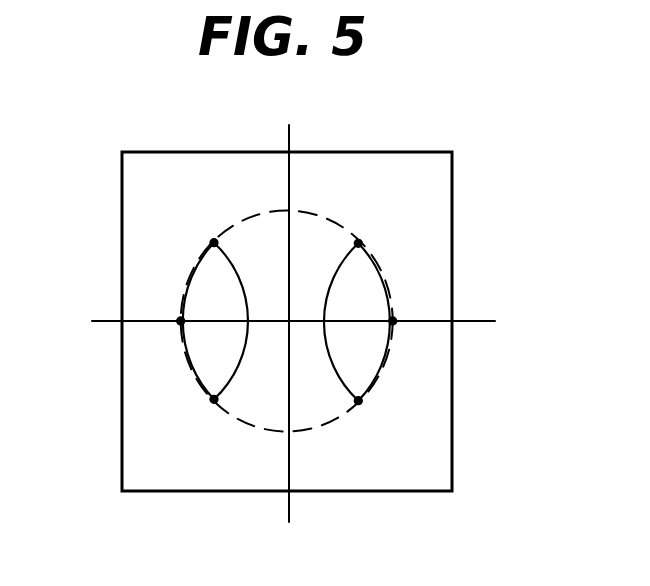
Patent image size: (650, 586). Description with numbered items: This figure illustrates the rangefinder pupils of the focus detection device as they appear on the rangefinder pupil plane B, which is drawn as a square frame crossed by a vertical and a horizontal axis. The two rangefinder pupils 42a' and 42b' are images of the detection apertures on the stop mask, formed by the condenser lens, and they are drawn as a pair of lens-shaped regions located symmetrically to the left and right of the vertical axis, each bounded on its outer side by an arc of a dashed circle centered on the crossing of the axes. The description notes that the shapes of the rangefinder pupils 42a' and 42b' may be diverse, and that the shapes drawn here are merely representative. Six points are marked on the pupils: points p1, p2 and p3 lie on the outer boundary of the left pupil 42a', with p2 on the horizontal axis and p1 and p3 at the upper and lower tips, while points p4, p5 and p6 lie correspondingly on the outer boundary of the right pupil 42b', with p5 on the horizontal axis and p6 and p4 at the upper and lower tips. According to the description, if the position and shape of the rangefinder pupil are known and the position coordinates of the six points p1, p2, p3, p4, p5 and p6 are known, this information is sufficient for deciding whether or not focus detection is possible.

The rangefinder pupil plane B is at (393, 472).
The rangefinder pupil 42a' is at (146, 321).
The rangefinder pupil 42b' is at (424, 306).
The point p1 is at (204, 225).
The point p2 is at (166, 340).
The point p3 is at (196, 409).
The point p4 is at (373, 415).
The point p5 is at (407, 303).
The point p6 is at (373, 226).